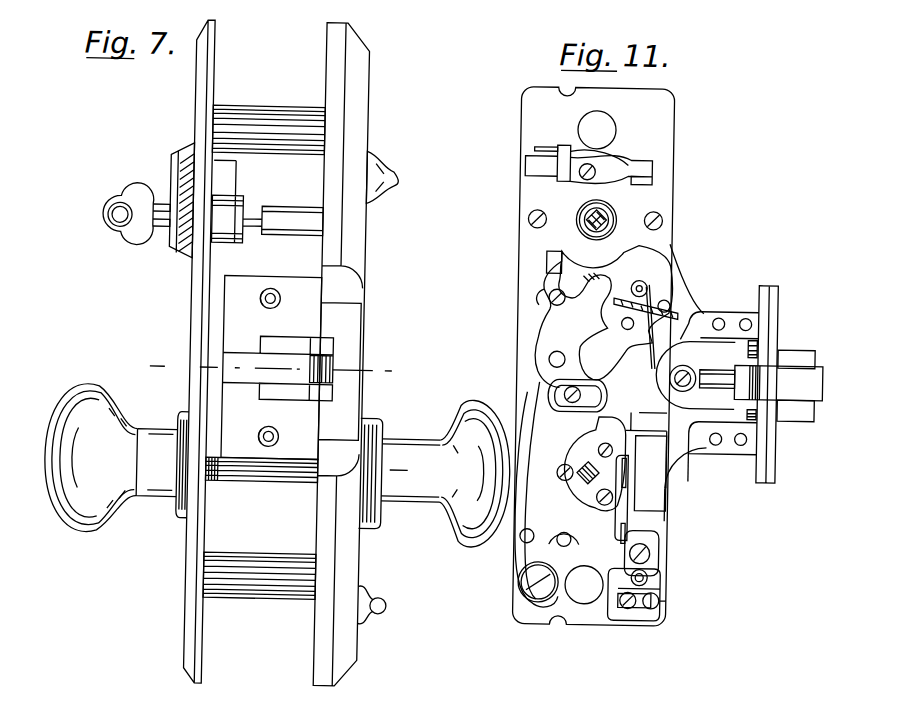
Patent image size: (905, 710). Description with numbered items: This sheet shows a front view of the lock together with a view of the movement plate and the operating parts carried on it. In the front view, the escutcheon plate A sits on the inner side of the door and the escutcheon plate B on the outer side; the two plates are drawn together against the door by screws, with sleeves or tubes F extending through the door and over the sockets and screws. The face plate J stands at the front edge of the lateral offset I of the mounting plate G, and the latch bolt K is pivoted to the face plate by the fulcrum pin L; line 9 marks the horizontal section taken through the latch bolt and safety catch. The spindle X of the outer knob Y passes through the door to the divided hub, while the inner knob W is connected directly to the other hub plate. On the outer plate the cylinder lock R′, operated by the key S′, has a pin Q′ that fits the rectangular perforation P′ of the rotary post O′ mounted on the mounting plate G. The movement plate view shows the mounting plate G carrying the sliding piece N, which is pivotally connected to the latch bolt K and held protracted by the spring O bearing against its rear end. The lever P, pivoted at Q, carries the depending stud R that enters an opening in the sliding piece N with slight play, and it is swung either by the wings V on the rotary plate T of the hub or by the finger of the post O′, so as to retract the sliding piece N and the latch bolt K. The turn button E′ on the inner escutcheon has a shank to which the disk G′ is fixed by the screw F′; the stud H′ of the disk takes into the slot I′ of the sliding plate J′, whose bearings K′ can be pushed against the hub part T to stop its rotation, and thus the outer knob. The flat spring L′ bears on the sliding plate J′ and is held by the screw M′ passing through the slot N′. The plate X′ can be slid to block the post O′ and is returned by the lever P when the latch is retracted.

In FIG. 7, the escutcheon plate A is at (356, 86).
In FIG. 7, the escutcheon plate B is at (200, 108).
In FIG. 7, the screw F′ is at (245, 118).
In FIG. 11, the screw F′ is at (637, 606).
In FIG. 7, the sleeves or tubes F is at (255, 600).
In FIG. 7, the spindle X is at (209, 476).
In FIG. 11, the spindle X is at (585, 481).
In FIG. 7, the face plate J is at (271, 368).
In FIG. 11, the face plate J is at (770, 311).
In FIG. 7, the latch bolt K is at (334, 362).
In FIG. 11, the latch bolt K is at (806, 376).
In FIG. 7, the section line 9 is at (265, 368).
In FIG. 7, the pin or spindle Q′ is at (252, 213).
In FIG. 7, the rotary post O′ is at (292, 213).
In FIG. 11, the rotary post O′ is at (611, 216).
In FIG. 7, the cylinder lock R′ is at (170, 248).
In FIG. 7, the key S′ is at (125, 238).
In FIG. 7, the turn button E′ is at (386, 612).
In FIG. 7, the knob Y is at (115, 516).
In FIG. 7, the knob W is at (438, 521).
In FIG. 11, the mounting plate G is at (660, 136).
In FIG. 11, the rectangular perforation P′ is at (605, 226).
In FIG. 11, the plate X′ is at (640, 173).
In FIG. 11, the depending stud R is at (548, 360).
In FIG. 11, the sliding piece N is at (646, 419).
In FIG. 11, the lever P is at (526, 401).
In FIG. 11, the spring O is at (525, 506).
In FIG. 11, the offsets or wings V is at (596, 432).
In FIG. 11, the rotary plate T is at (632, 488).
In FIG. 11, the stud H′ is at (636, 473).
In FIG. 11, the surfaces or bearings K′ is at (630, 539).
In FIG. 11, the screw M′ is at (656, 556).
In FIG. 11, the sliding plate J′ is at (655, 580).
In FIG. 11, the slot N′ is at (658, 584).
In FIG. 11, the slot I′ is at (670, 606).
In FIG. 11, the disk G′ is at (660, 612).
In FIG. 11, the pivot Q is at (525, 589).
In FIG. 11, the lateral offset I is at (690, 456).
In FIG. 11, the flat spring L′ is at (670, 491).
In FIG. 11, the fulcrum pin L is at (760, 346).